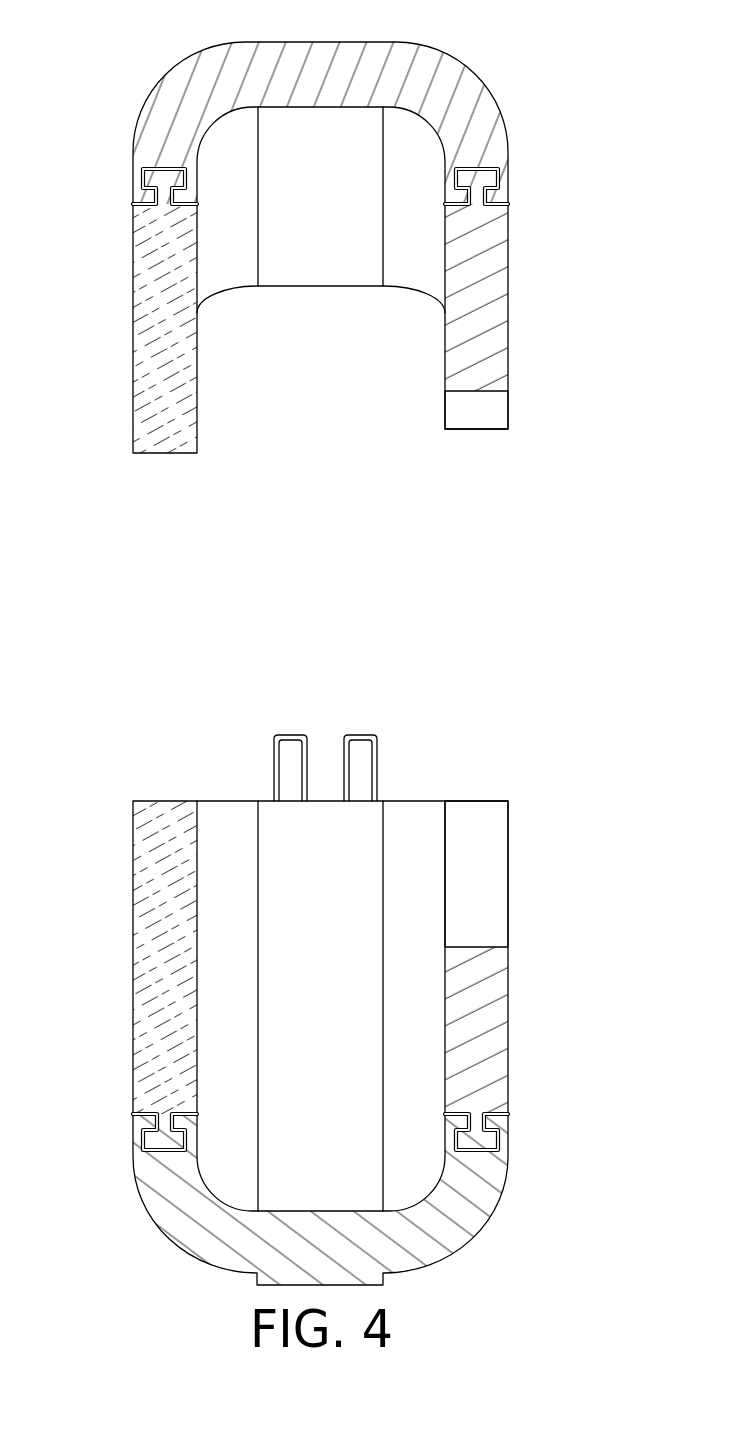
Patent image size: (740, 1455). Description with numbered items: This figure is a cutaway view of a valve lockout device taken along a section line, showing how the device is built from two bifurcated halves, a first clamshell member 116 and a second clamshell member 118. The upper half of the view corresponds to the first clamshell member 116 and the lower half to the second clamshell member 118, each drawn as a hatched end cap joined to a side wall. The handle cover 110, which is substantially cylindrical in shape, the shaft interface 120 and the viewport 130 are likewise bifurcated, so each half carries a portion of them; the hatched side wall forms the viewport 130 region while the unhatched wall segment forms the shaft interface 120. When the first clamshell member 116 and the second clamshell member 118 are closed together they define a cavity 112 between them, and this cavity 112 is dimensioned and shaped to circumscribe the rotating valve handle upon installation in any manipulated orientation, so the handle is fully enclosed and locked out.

The handle cover 110 is at (376, 661).
The cavity 112 is at (373, 446).
The first clamshell member 116 is at (507, 140).
The second clamshell member 118 is at (502, 1195).
The shaft interface 120 is at (497, 416).
The viewport 130 is at (147, 325).